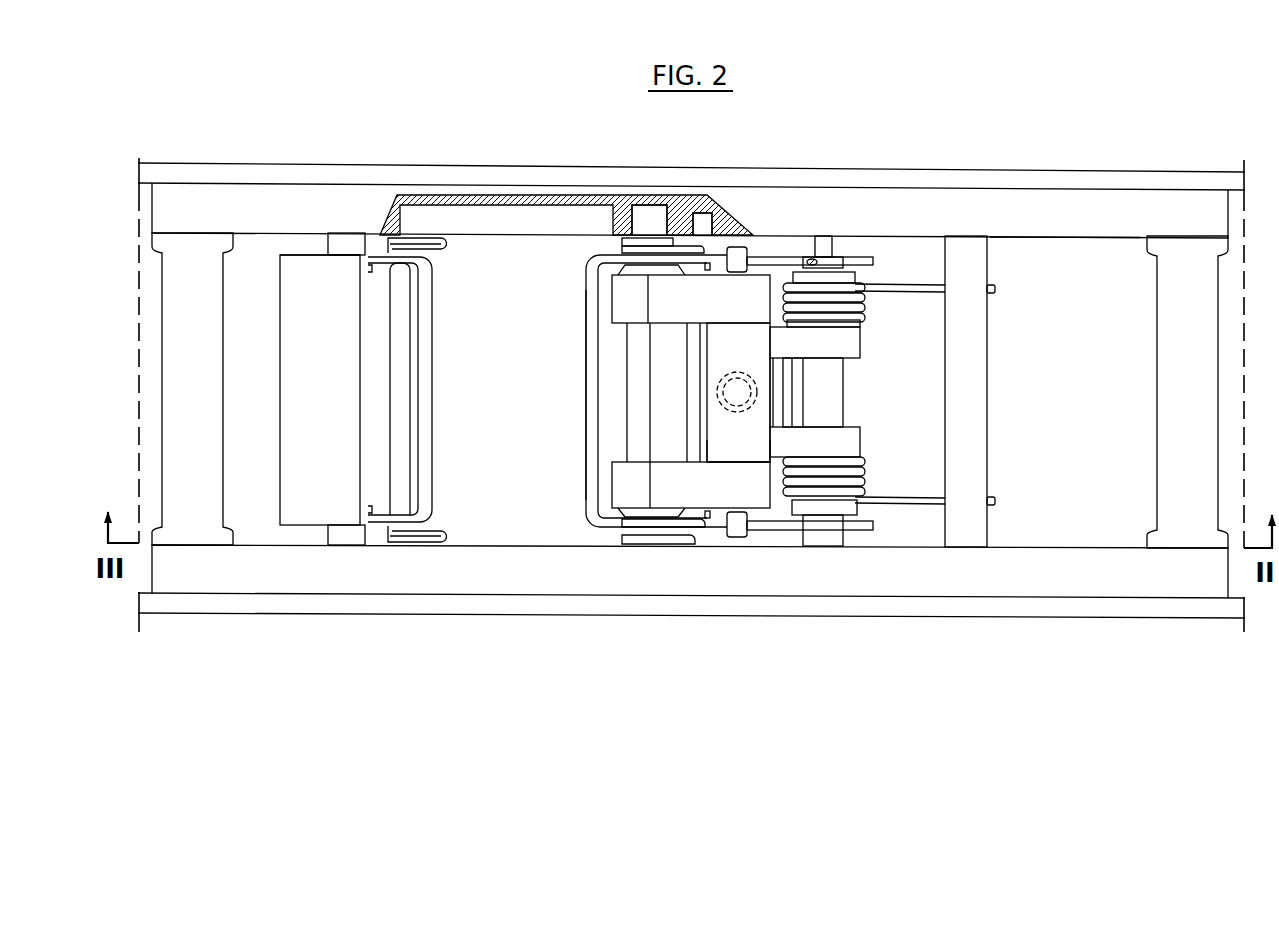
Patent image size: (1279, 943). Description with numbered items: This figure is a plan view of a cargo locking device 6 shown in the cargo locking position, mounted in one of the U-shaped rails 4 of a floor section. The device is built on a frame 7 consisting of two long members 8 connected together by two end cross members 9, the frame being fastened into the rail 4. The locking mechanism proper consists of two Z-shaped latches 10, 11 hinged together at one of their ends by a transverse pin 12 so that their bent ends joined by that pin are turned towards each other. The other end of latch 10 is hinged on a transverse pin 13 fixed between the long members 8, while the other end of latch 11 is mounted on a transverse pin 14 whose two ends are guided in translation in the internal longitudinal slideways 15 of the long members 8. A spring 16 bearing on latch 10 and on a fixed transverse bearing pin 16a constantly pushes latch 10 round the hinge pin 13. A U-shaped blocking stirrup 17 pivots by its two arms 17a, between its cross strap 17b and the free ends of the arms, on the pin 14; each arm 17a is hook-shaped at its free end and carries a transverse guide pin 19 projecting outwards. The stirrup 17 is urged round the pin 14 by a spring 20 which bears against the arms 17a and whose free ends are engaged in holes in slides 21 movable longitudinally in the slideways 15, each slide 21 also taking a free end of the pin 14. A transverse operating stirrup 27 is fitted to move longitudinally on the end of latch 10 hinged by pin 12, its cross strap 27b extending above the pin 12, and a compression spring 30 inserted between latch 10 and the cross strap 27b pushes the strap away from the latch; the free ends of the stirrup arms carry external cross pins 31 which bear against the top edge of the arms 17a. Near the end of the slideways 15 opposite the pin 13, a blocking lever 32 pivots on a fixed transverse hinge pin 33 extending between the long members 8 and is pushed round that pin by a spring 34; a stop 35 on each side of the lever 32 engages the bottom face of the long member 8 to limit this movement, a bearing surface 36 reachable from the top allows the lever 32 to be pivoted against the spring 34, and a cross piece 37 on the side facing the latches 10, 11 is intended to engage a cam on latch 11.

The rail 4 is at (998, 182).
The locking device 6 is at (902, 186).
The frame 7 is at (1010, 252).
The long member 8 is at (1051, 215).
The end cross member 9 is at (200, 387).
The latch 10 is at (862, 433).
The latch 11 is at (613, 481).
The transverse pin 12 is at (737, 323).
The transverse pin 13 is at (823, 549).
The transverse pin 14 is at (650, 222).
The slideway 15 is at (557, 221).
The spring 16 is at (903, 287).
The bearing pin 16a is at (967, 393).
The blocking stirrup 17 is at (582, 352).
The arm 17a is at (770, 248).
The cross strap 17b is at (592, 392).
The guide pin 19 is at (823, 248).
The spring 20 is at (698, 254).
The slide 21 is at (683, 216).
The operating stirrup 27 is at (776, 383).
The cross strap 27b is at (737, 428).
The compression spring 30 is at (734, 373).
The cross pin 31 is at (737, 247).
The blocking lever 32 is at (314, 246).
The hinge pin 33 is at (413, 330).
The spring 34 is at (440, 251).
The stop 35 is at (348, 247).
The bearing surface 36 is at (313, 433).
The cross piece 37 is at (425, 390).